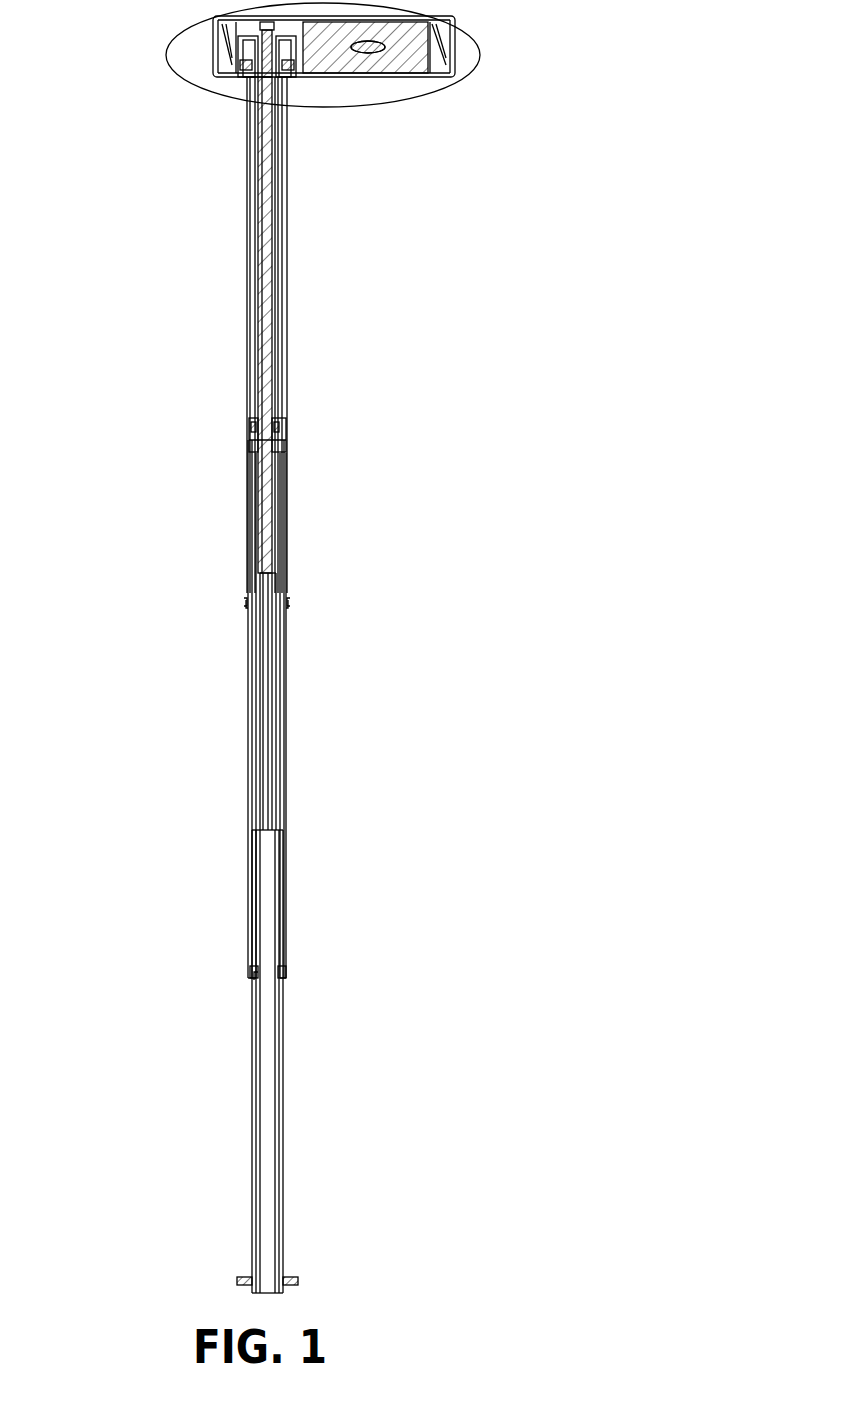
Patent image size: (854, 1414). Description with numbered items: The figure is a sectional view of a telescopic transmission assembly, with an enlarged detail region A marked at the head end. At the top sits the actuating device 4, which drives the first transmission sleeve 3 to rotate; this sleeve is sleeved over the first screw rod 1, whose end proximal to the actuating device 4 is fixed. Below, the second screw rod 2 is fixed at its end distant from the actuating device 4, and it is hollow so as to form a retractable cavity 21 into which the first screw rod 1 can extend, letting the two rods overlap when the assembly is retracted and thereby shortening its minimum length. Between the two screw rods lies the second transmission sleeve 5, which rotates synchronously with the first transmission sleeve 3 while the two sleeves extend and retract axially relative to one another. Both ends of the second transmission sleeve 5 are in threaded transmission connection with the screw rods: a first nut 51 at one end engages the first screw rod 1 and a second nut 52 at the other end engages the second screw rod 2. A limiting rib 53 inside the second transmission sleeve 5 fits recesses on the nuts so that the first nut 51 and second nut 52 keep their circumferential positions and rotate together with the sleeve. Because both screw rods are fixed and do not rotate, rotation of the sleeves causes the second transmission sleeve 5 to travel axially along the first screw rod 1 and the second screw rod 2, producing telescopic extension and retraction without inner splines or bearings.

The first screw rod 1 is at (368, 325).
The second screw rod 2 is at (359, 1061).
The first transmission sleeve 3 is at (176, 341).
The actuating device 4 is at (382, 44).
The second transmission sleeve 5 is at (175, 709).
The retractable cavity 21 is at (378, 1061).
The first nut 51 is at (169, 415).
The second nut 52 is at (165, 948).
The limiting rib 53 is at (365, 701).
The detail region A is at (353, 78).